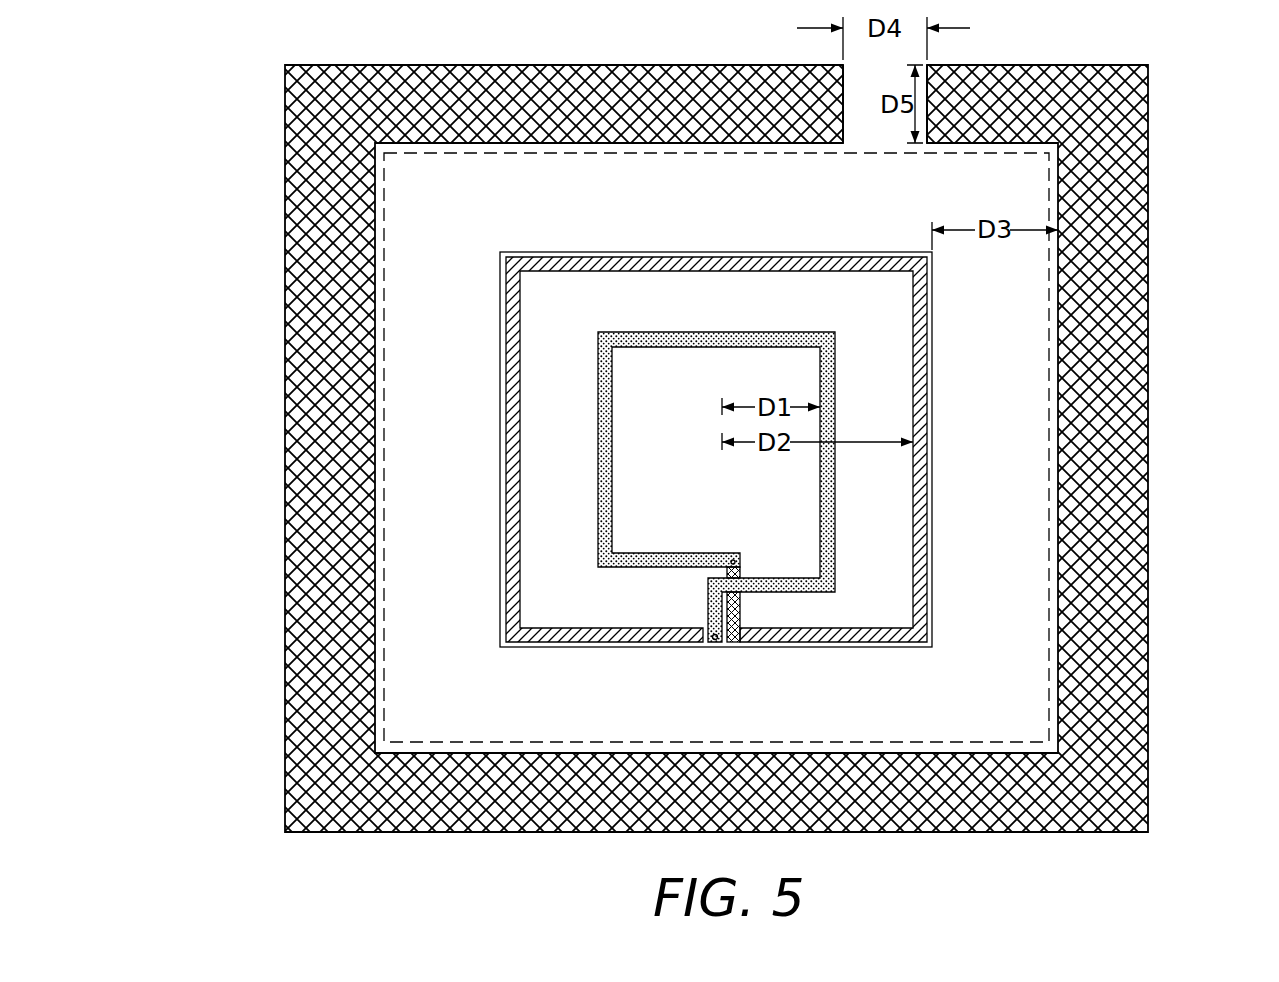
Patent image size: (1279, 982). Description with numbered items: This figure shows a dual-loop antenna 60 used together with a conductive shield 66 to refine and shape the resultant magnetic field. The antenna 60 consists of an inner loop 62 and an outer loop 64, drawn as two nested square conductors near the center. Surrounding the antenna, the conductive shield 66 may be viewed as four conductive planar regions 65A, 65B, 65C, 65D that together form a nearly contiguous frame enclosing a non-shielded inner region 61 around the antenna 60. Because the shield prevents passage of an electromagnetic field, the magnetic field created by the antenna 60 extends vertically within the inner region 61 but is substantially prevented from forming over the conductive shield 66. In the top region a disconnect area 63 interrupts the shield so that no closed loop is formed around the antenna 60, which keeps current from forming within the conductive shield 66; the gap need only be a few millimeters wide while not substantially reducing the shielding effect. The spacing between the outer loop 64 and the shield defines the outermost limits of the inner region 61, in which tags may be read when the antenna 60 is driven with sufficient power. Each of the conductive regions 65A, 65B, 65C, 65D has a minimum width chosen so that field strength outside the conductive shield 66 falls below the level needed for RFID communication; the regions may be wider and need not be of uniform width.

The dual-loop antenna 60 is at (582, 236).
The non-shielded inner region 61 is at (985, 154).
The inner loop 62 is at (733, 333).
The disconnect area 63 is at (867, 128).
The outer loop 64 is at (808, 257).
The conductive planar region 65A is at (665, 64).
The conductive planar region 65B is at (1135, 292).
The conductive planar region 65C is at (470, 818).
The conductive planar region 65D is at (297, 352).
The conductive shield 66 is at (713, 449).